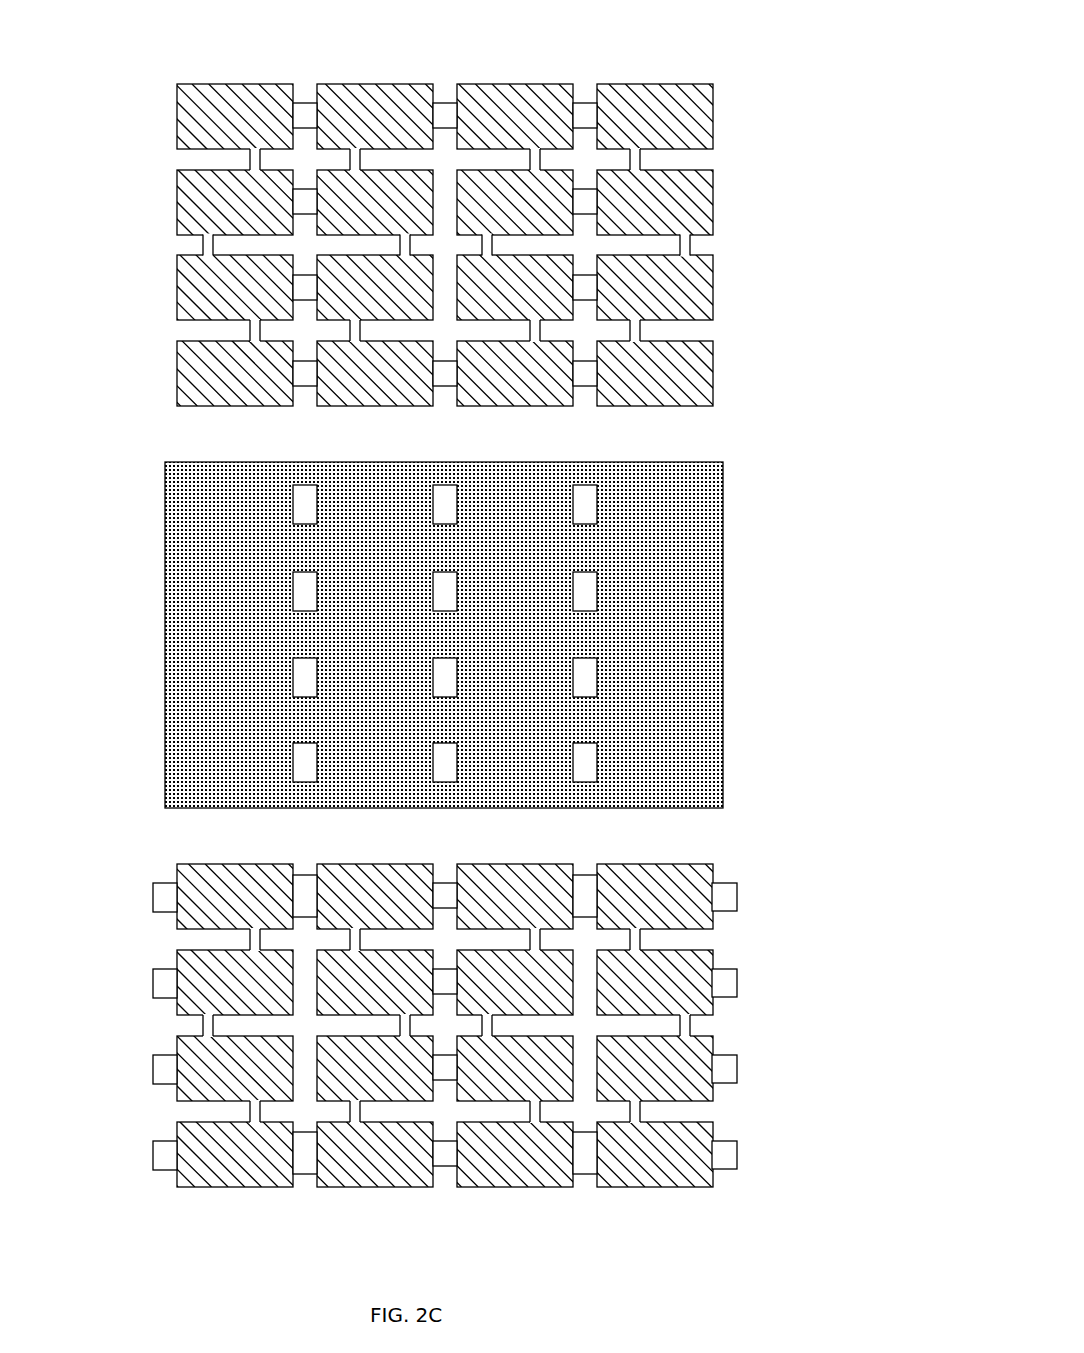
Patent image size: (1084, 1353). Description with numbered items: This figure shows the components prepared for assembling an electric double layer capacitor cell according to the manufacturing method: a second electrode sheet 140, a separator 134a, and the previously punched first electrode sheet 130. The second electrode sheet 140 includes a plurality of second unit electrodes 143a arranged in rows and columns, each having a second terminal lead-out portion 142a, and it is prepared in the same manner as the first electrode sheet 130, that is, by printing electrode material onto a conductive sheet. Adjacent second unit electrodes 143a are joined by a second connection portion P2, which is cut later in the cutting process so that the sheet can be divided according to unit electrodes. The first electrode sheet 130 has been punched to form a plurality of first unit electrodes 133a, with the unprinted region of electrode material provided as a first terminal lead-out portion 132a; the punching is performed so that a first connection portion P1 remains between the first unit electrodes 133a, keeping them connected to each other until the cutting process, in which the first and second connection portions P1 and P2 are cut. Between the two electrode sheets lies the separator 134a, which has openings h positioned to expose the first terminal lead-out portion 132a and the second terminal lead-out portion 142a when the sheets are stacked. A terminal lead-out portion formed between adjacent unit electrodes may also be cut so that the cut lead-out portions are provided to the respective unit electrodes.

The second electrode sheet 140 is at (485, 208).
The second unit electrode 143a is at (237, 84).
The second terminal lead-out portion 142a is at (302, 103).
The second connection portion P2 is at (440, 103).
The separator 134a is at (491, 635).
The opening h is at (583, 592).
The first electrode sheet 130 is at (484, 1052).
The first unit electrode 133a is at (234, 1187).
The first terminal lead-out portion 132a is at (737, 905).
The first connection portion P1 is at (203, 1024).